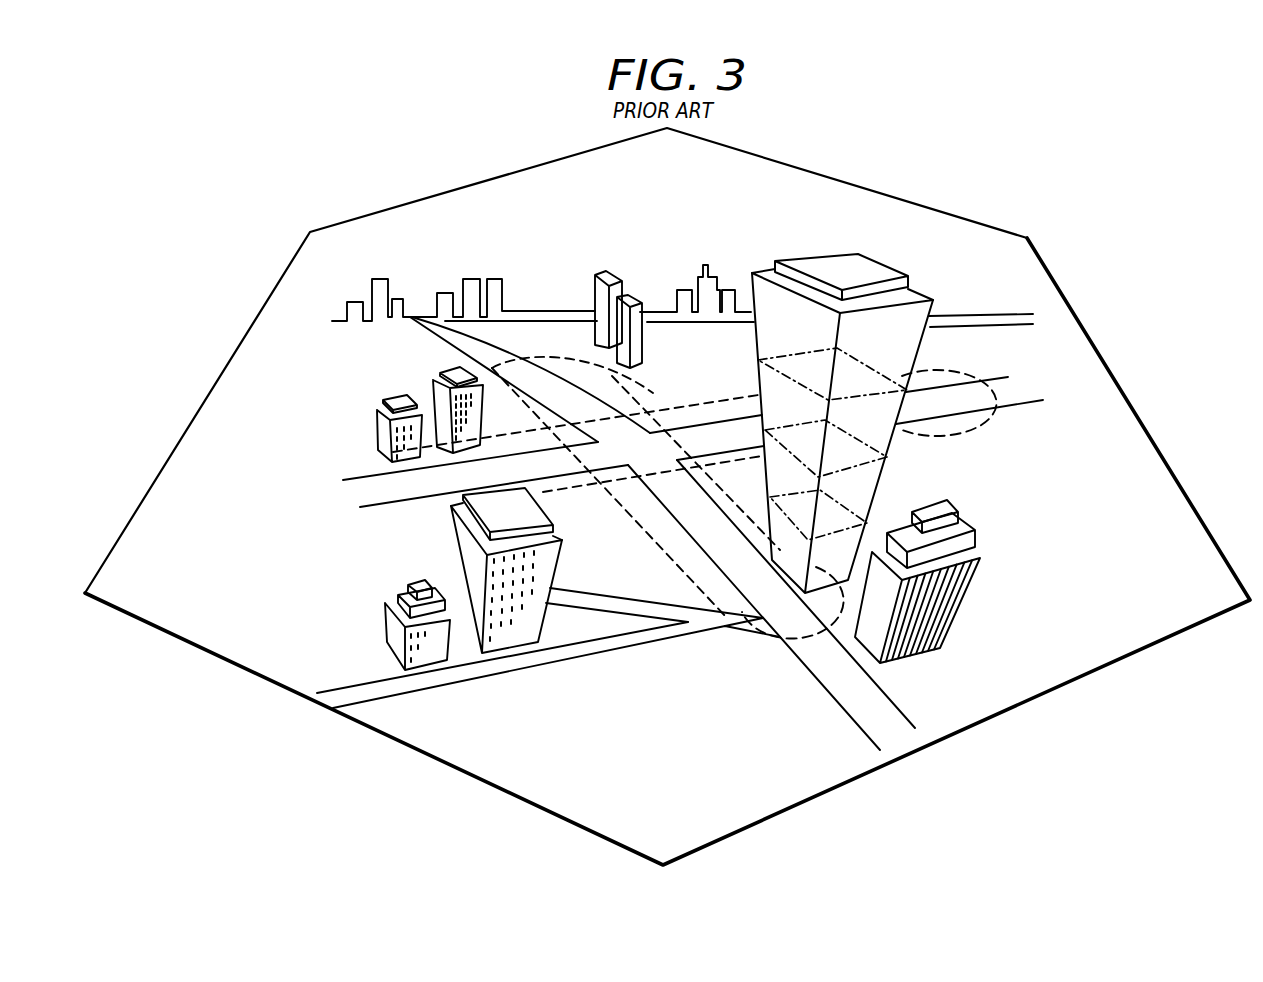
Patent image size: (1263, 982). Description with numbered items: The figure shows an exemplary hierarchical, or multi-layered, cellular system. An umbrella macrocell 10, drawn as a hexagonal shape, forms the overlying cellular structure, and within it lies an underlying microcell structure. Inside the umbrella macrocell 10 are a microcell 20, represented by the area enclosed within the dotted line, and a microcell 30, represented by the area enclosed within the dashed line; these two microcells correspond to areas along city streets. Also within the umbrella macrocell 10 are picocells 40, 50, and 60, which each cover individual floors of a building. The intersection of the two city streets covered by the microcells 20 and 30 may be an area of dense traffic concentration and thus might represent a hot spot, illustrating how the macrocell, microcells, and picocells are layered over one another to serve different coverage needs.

The umbrella macrocell 10 is at (390, 742).
The microcell 20 is at (560, 357).
The microcell 30 is at (432, 508).
The picocell 40 is at (892, 383).
The picocell 50 is at (889, 452).
The picocell 60 is at (814, 535).